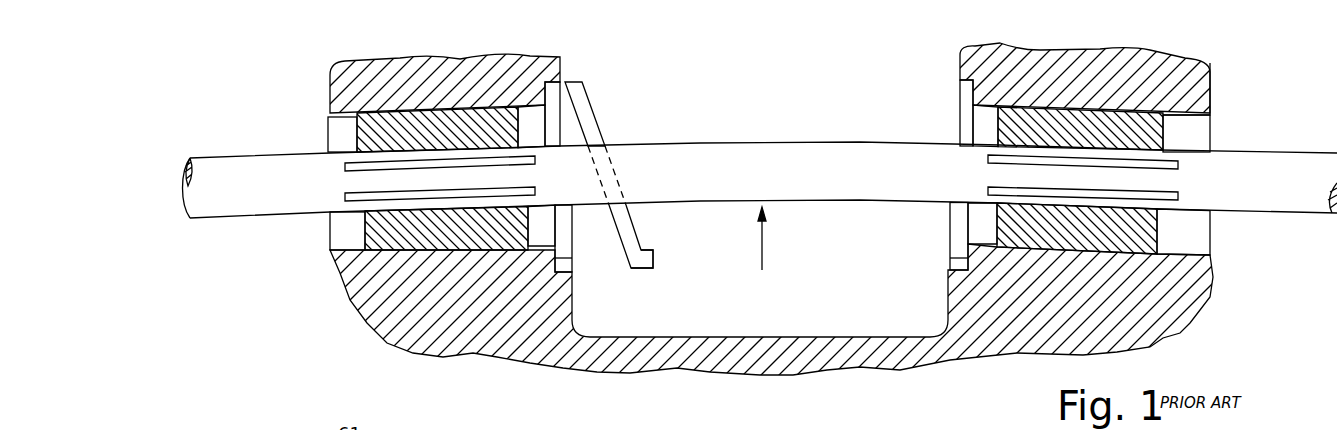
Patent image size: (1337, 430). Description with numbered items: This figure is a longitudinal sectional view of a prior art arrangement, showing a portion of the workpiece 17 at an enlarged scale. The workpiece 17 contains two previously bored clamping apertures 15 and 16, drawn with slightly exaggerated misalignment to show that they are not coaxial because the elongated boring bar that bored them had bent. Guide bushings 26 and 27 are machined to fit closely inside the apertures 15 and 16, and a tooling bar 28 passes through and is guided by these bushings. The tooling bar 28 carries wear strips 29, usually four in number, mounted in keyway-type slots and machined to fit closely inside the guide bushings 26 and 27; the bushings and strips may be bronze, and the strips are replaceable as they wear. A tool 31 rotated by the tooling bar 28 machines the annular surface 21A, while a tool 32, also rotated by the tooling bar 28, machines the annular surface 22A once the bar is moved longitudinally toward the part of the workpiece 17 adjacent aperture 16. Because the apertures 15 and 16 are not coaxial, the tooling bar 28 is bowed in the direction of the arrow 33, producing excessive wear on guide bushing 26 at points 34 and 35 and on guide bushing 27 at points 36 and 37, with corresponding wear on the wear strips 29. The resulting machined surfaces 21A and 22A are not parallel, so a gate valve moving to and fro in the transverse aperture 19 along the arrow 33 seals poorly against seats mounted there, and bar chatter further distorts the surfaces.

The clamping aperture 15 is at (330, 117).
The clamping aperture 16 is at (1212, 118).
The workpiece 17 is at (947, 302).
The transverse aperture 19 is at (960, 62).
The annular surface 21A is at (566, 258).
The annular surface 22A is at (950, 258).
The guide bushing 26 is at (444, 141).
The guide bushing 27 is at (1099, 140).
The tooling bar 28 is at (796, 146).
The wear strips 29 is at (345, 198).
The tool 31 is at (590, 101).
The tool 32 is at (655, 258).
The arrow 33 is at (764, 250).
The wear point 34 is at (328, 136).
The wear point 35 is at (528, 205).
The wear point 36 is at (1212, 150).
The wear point 37 is at (995, 203).